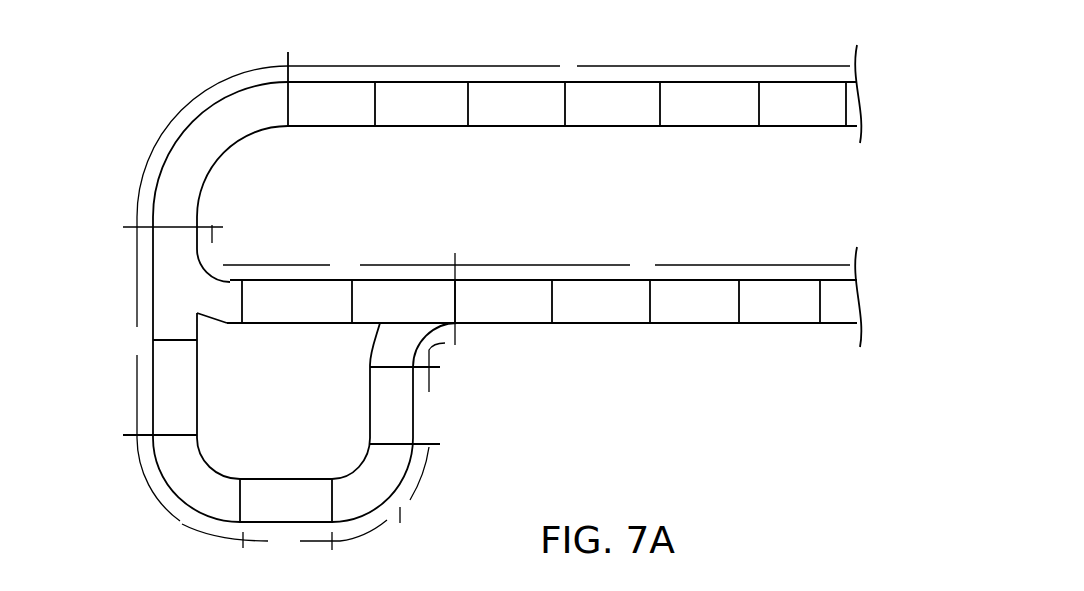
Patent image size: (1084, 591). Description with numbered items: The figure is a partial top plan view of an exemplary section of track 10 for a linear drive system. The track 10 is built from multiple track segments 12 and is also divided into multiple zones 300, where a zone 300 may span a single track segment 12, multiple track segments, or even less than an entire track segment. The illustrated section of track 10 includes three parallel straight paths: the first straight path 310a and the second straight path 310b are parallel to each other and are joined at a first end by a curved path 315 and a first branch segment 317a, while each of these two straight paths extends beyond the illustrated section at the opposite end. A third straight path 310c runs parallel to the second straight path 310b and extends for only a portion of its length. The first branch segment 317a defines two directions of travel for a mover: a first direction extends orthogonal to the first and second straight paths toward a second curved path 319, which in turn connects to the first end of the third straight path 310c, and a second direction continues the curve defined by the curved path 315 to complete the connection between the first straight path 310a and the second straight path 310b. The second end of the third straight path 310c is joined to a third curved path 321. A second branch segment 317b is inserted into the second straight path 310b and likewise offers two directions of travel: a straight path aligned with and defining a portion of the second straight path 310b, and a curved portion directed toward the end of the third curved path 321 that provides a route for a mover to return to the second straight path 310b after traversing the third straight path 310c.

The track 10 is at (700, 31).
The track segments 12 is at (335, 110).
The zones 300 is at (178, 107).
The first straight path 310a is at (448, 80).
The second straight path 310b is at (520, 278).
The third straight path 310c is at (268, 474).
The curved path 315 is at (225, 170).
The first branch segment 317a is at (156, 315).
The second branch segment 317b is at (354, 348).
The second curved path 319 is at (158, 482).
The third curved path 321 is at (419, 455).